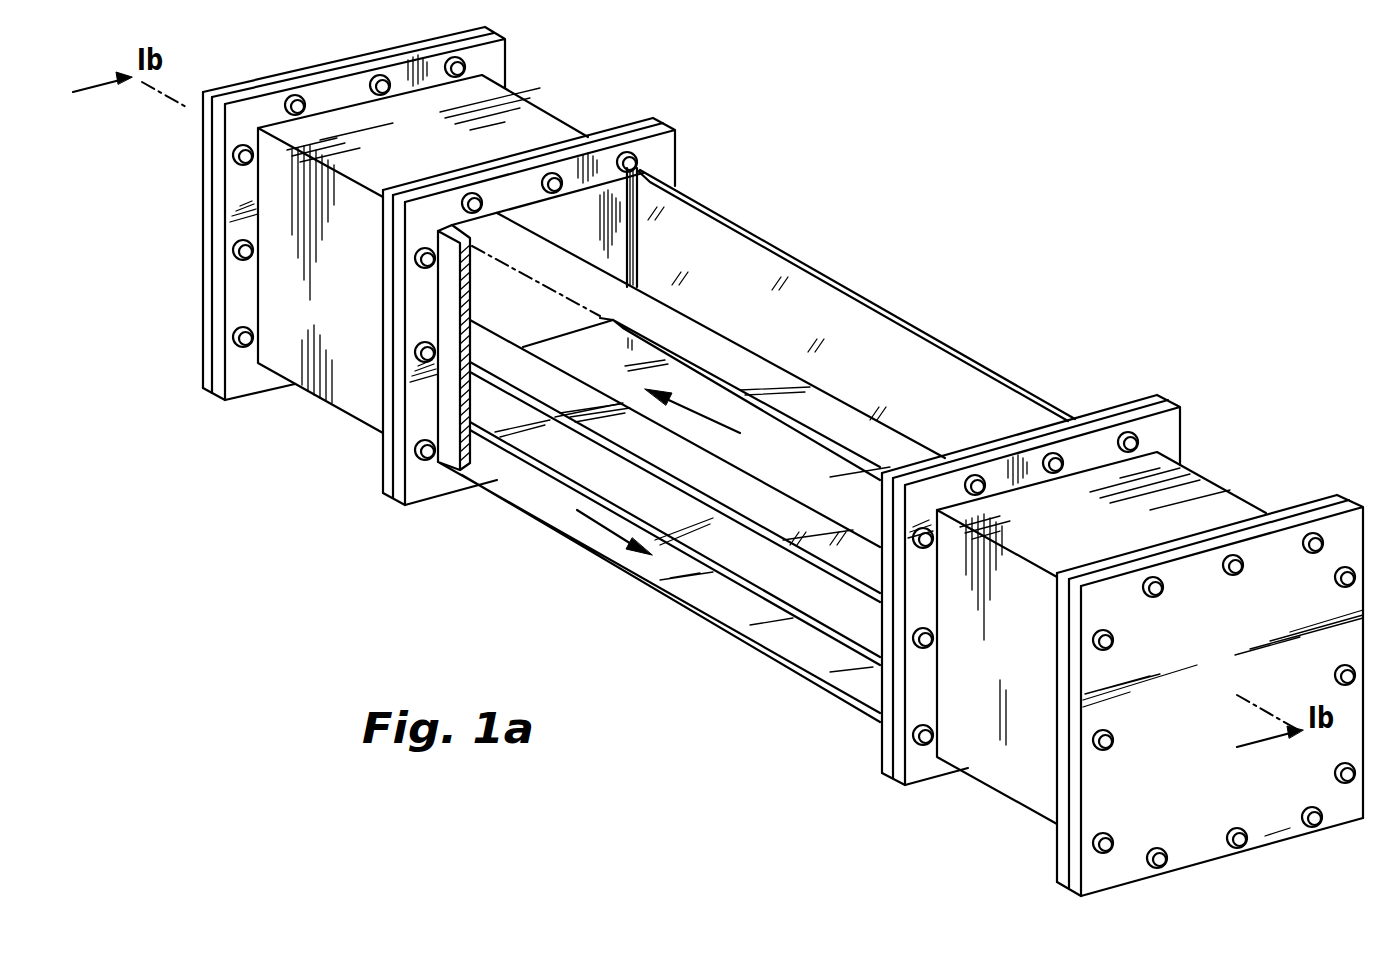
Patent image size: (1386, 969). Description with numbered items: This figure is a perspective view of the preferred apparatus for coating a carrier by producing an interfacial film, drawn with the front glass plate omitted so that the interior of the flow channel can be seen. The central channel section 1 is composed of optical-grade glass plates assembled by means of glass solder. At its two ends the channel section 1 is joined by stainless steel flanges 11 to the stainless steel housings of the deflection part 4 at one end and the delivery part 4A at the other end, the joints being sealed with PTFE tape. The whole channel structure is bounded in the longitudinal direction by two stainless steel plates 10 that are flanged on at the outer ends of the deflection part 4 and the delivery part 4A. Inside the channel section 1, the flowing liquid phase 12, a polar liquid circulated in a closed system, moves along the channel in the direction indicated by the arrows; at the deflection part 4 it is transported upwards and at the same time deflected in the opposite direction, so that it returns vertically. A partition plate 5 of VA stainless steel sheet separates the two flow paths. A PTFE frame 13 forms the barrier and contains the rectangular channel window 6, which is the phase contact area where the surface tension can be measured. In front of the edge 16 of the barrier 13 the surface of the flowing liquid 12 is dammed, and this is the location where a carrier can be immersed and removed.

The channel section 1 is at (880, 284).
The deflection part 4 is at (1001, 800).
The delivery part 4A is at (323, 408).
The partition plate 5 is at (563, 473).
The rectangular channel window 6 is at (723, 457).
The stainless steel plates 10 is at (207, 178).
The stainless steel flanges 11 is at (672, 143).
The liquid phase 12 is at (703, 407).
The PTFE frame 13 is at (687, 333).
The edge of the barrier 16 is at (577, 337).